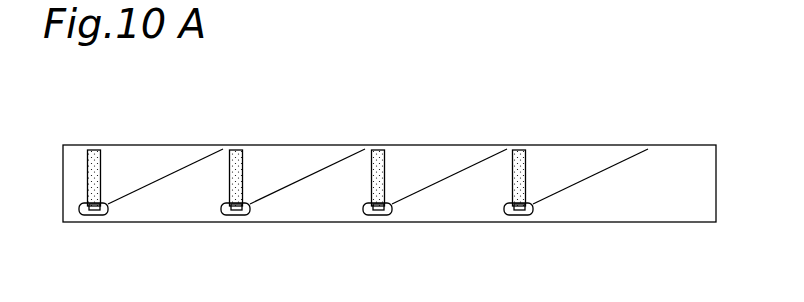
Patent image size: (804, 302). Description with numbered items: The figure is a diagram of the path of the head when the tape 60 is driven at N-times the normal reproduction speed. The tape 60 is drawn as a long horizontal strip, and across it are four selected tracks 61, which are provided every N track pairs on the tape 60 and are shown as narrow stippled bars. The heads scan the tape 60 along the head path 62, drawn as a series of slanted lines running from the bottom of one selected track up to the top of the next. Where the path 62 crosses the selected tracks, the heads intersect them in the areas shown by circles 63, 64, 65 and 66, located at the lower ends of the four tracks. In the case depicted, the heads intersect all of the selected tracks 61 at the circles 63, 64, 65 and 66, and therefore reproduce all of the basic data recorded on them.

The tape 60 is at (158, 145).
The selected tracks 61 is at (237, 150).
The head path 62 is at (340, 160).
The intersection area 63 is at (107, 213).
The intersection area 64 is at (248, 213).
The intersection area 65 is at (392, 210).
The intersection area 66 is at (532, 210).